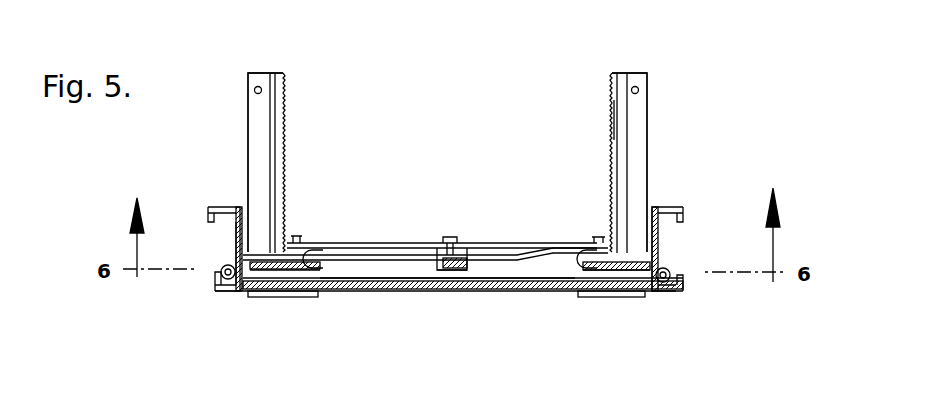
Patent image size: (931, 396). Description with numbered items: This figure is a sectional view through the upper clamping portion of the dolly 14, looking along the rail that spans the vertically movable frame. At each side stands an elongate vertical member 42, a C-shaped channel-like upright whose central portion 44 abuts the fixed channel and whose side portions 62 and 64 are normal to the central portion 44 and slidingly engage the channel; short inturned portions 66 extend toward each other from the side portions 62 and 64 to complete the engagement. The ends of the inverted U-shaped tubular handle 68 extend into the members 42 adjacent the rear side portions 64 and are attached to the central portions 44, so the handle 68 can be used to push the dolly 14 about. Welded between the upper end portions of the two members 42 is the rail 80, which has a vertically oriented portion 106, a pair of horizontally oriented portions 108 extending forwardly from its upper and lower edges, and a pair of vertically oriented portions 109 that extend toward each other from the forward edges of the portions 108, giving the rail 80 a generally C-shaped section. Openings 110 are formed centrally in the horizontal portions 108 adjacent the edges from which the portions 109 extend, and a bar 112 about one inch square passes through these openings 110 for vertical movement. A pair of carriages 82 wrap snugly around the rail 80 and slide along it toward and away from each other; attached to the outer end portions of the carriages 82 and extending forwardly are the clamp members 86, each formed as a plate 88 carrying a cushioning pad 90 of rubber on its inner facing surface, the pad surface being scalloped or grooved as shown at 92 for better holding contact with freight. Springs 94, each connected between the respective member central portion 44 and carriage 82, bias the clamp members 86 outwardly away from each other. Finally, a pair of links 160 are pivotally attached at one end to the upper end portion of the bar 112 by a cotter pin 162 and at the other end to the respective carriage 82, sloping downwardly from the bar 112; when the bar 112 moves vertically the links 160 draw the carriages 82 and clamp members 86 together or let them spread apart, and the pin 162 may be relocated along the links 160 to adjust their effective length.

The dolly 14 is at (712, 88).
The elongate vertical member 42 is at (668, 208).
The central portion 44 is at (244, 222).
The side portion 62 is at (226, 206).
The side portion 64 is at (228, 292).
The portion 66 is at (222, 262).
The handle 68 is at (215, 282).
The rail 80 is at (530, 282).
The carriage 82 is at (657, 283).
The clamp member 86 is at (257, 119).
The plate 88 is at (638, 147).
The pad 90 is at (612, 88).
The scalloped or grooved surface 92 is at (612, 118).
The spring 94 is at (268, 288).
The vertically oriented portion 106 is at (339, 285).
The horizontally oriented portion 108 is at (478, 270).
The vertically oriented portion 109 is at (518, 255).
The opening 110 is at (430, 285).
The bar 112 is at (470, 248).
The link 160 is at (372, 243).
The cotter pin 162 is at (446, 236).